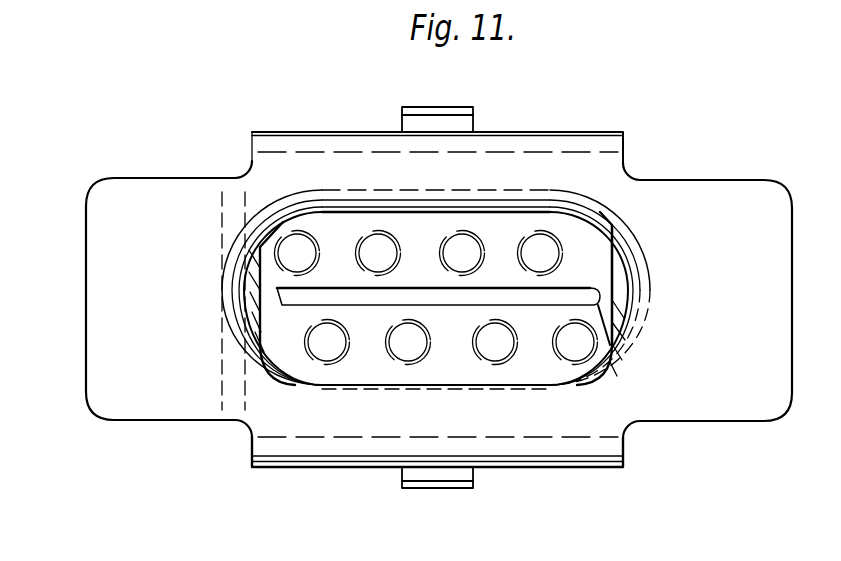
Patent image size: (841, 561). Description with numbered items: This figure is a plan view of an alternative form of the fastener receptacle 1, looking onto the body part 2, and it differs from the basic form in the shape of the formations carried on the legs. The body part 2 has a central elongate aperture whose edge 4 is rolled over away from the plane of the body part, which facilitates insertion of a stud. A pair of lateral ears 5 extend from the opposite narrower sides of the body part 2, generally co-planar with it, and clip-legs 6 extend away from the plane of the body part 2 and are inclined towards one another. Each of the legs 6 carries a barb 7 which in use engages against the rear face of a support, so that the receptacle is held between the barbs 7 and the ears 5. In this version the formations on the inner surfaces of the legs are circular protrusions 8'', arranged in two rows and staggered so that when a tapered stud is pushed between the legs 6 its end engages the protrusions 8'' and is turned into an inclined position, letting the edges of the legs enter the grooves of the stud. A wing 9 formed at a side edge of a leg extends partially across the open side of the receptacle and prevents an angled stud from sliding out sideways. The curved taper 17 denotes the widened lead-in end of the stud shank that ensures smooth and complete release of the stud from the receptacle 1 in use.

The fastener receptacle 1 is at (222, 437).
The body part 2 is at (292, 416).
The edge of the central elongate aperture 4 is at (622, 343).
The lateral ears 5 is at (152, 193).
The clip-legs 6 is at (572, 132).
The barb 7 is at (466, 122).
The circular protrusions 8'' is at (427, 305).
The wing 9 is at (268, 288).
The curved taper 17 is at (617, 284).